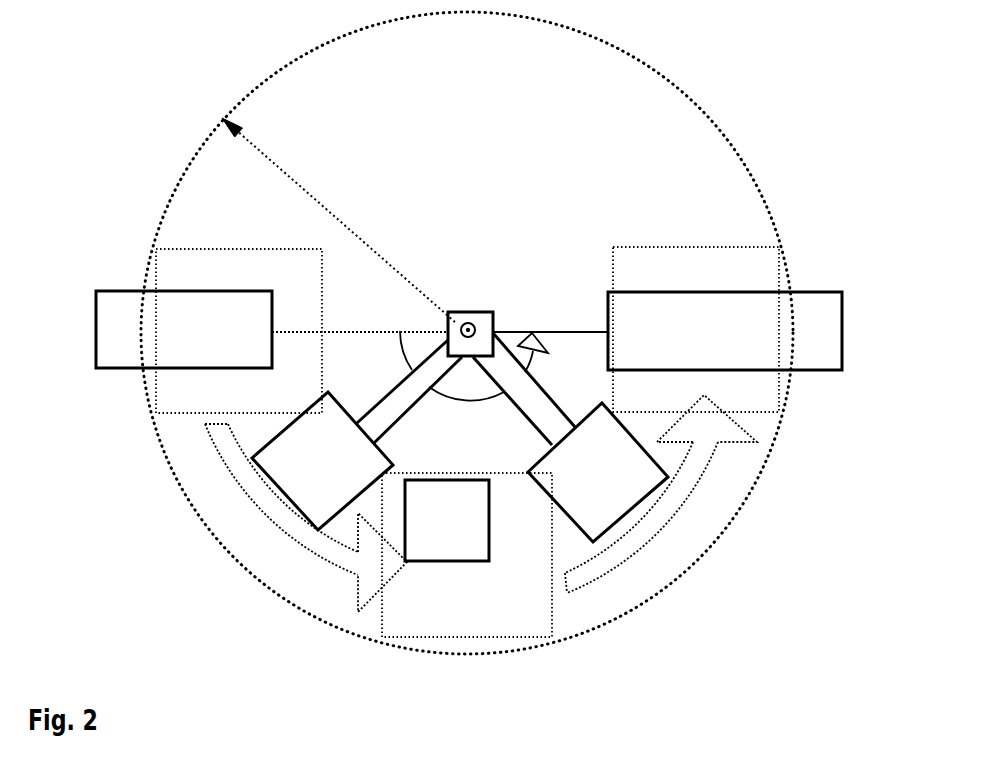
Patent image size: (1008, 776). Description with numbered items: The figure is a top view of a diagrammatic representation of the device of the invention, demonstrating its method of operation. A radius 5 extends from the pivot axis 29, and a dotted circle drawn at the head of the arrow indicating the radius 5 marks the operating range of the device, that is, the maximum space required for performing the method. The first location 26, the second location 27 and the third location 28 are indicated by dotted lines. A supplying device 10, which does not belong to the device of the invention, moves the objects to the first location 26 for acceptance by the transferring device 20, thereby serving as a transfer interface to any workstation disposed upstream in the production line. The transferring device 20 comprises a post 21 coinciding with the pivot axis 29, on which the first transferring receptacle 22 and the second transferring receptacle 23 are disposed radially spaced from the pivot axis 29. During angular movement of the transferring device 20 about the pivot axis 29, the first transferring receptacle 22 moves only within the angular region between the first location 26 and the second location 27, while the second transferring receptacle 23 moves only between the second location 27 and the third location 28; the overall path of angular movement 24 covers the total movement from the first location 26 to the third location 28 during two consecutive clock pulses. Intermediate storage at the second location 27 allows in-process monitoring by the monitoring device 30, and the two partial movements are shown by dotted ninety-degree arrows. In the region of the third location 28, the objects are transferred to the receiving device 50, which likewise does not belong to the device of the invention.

The radius 5 is at (358, 235).
The supplying device 10 is at (184, 329).
The transferring device 20 is at (470, 195).
The post 21 is at (489, 311).
The first transferring receptacle 22 is at (322, 461).
The second transferring receptacle 23 is at (598, 472).
The path of angular movement 24 is at (470, 405).
The first location 26 is at (239, 331).
The second location 27 is at (467, 557).
The third location 28 is at (696, 329).
The pivot axis 29 is at (466, 322).
The monitoring device 30 is at (447, 520).
The receiving device 50 is at (725, 331).